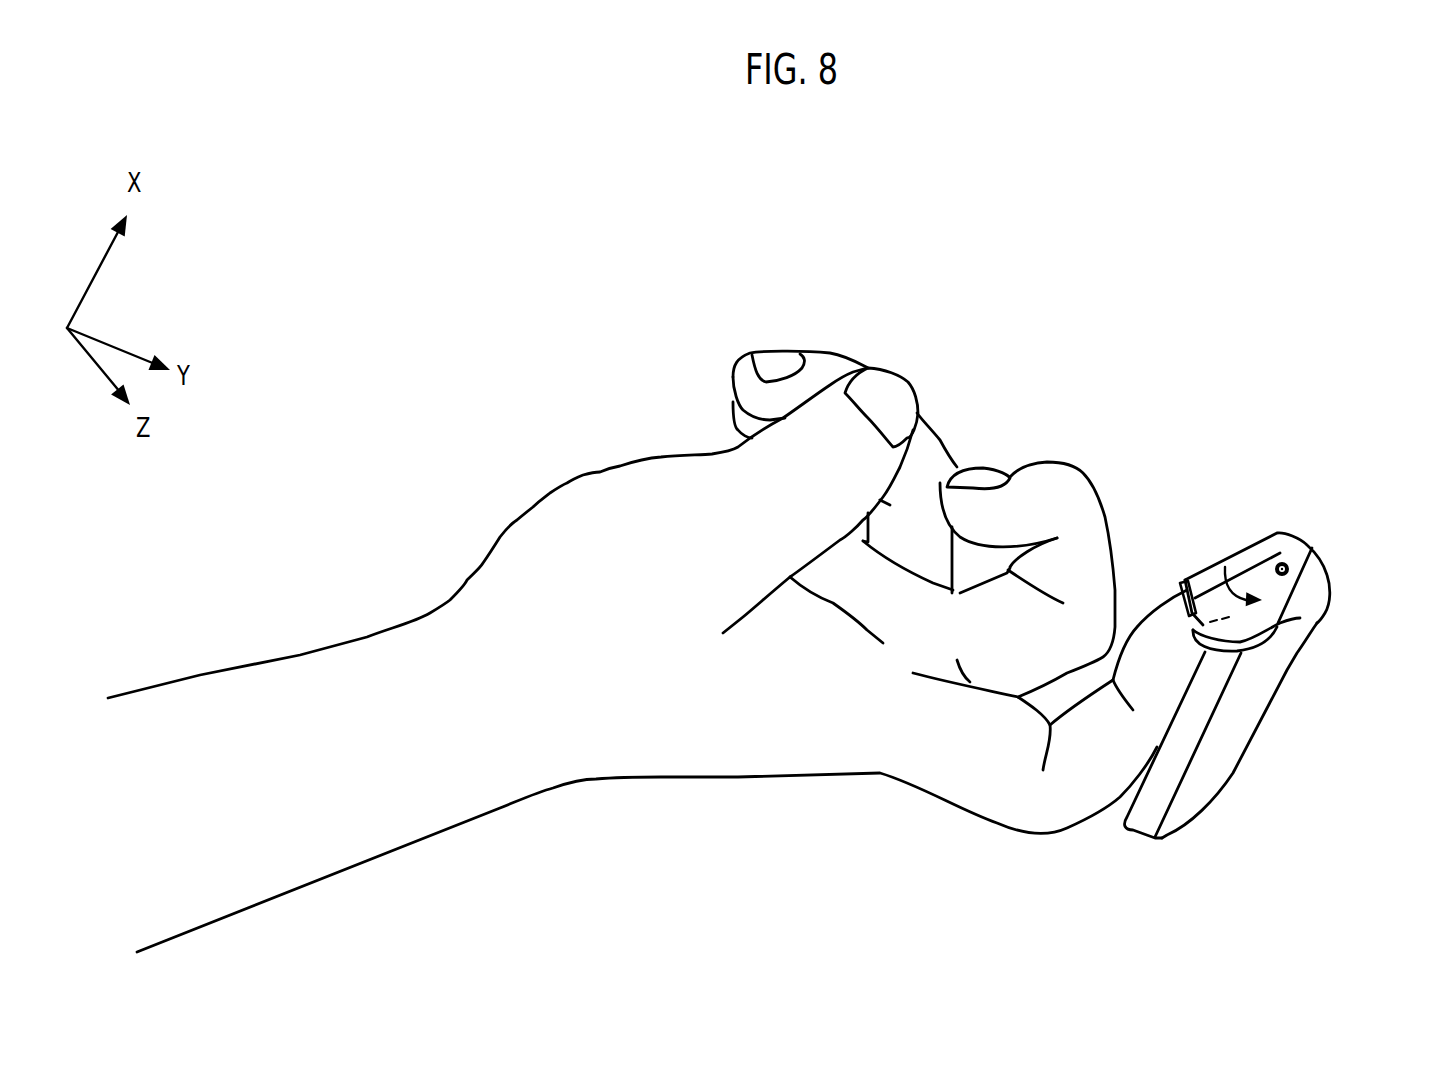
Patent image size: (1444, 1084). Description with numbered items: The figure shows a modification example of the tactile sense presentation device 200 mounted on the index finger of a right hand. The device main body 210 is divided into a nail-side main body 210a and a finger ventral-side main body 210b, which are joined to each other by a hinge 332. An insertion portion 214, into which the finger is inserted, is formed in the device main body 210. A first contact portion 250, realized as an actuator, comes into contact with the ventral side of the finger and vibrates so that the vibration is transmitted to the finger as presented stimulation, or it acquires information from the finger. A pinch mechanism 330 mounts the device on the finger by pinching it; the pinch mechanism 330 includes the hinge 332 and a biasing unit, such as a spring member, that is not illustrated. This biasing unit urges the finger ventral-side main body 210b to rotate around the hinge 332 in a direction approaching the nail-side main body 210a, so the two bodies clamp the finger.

The tactile sense presentation device 200 is at (1238, 427).
The device main body 210 is at (1276, 549).
The nail-side main body 210a is at (1253, 730).
The finger ventral-side main body 210b is at (1245, 548).
The insertion portion 214 is at (1300, 618).
The first contact portion 250 is at (1182, 591).
The pinch mechanism 330 is at (1287, 561).
The hinge 332 is at (1290, 566).